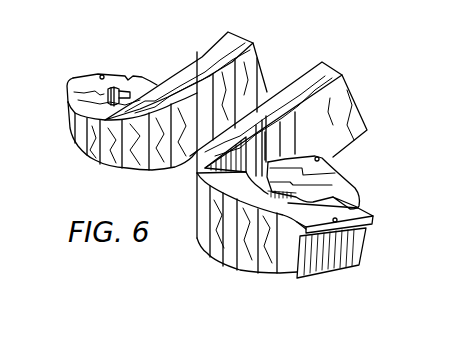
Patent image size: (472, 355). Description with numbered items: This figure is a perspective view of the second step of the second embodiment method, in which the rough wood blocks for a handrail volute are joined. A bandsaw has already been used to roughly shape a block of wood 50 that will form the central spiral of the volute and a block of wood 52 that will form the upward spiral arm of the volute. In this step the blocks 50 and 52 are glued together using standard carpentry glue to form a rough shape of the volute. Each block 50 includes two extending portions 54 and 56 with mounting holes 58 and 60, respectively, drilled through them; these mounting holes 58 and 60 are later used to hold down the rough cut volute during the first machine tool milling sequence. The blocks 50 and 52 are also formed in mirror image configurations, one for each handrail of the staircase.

The block of wood 50 is at (80, 151).
The block of wood 52 is at (307, 67).
The extending portion 54 is at (343, 167).
The extending portion 56 is at (120, 74).
The mounting hole 58 is at (318, 157).
The mounting hole 60 is at (101, 75).